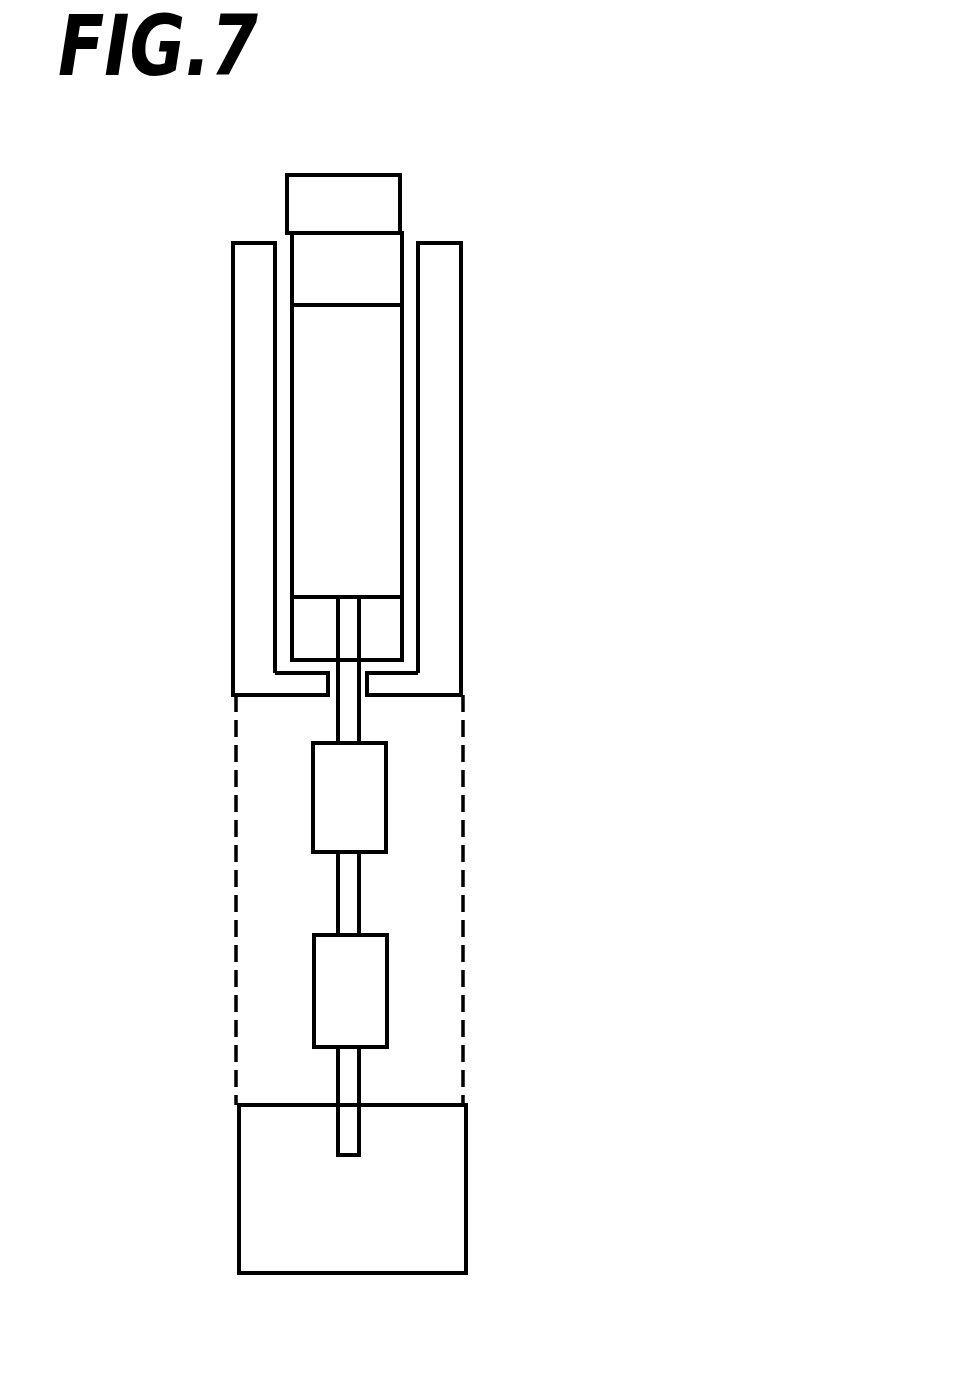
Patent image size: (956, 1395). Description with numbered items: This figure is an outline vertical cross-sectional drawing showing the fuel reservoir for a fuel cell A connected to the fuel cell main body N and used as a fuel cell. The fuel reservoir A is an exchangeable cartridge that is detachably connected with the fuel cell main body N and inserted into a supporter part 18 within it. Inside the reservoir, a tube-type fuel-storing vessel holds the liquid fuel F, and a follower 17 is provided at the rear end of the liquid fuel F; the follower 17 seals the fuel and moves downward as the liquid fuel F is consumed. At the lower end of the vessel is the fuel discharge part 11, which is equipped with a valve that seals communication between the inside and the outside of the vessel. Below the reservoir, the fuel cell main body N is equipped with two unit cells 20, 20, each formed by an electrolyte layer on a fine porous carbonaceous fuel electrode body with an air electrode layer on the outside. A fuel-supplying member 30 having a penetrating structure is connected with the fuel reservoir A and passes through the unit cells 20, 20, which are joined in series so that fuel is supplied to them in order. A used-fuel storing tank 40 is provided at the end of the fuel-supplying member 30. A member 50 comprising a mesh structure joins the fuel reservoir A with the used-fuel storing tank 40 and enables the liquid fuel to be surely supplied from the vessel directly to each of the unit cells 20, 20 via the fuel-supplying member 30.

The fuel reservoir for a fuel cell A is at (412, 198).
The fuel cell main body N is at (487, 252).
The liquid fuel F is at (317, 452).
The follower 17 is at (380, 292).
The supporter part 18 is at (440, 430).
The fuel discharge part 11 is at (388, 625).
The fuel-supplying member 30 is at (352, 723).
The unit cell 20 is at (361, 810).
The mesh structure member 50 is at (465, 917).
The used-fuel storing tank 40 is at (445, 1172).